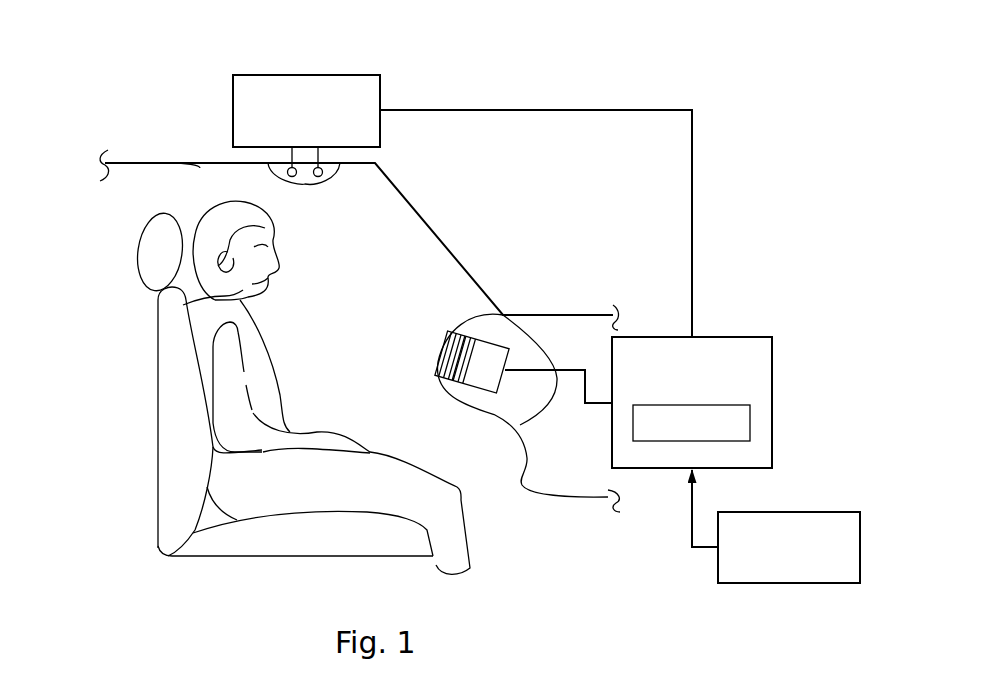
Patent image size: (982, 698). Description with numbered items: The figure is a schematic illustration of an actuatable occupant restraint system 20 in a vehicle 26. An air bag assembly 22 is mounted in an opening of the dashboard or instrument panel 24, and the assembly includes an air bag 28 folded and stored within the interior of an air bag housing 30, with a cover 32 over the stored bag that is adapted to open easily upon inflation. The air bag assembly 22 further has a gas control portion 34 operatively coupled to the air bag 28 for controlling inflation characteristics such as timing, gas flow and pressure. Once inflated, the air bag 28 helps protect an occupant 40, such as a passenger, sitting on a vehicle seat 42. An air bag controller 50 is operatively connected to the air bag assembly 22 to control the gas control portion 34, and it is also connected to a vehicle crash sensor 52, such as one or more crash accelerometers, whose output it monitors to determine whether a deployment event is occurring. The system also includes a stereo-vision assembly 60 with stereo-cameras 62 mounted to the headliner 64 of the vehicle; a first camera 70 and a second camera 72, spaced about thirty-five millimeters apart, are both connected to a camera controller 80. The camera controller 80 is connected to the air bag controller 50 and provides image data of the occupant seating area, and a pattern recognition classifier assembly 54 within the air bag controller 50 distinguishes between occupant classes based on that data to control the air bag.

The actuatable occupant restraint system 20 is at (596, 78).
The air bag assembly 22 is at (491, 330).
The instrument panel 24 is at (476, 313).
The vehicle 26 is at (180, 162).
The air bag 28 is at (445, 378).
The air bag housing 30 is at (478, 392).
The cover 32 is at (440, 345).
The gas control portion 34 is at (497, 380).
The occupant 40 is at (257, 317).
The vehicle seat 42 is at (157, 368).
The air bag controller 50 is at (740, 335).
The vehicle crash sensor 52 is at (793, 510).
The pattern recognition classifier assembly 54 is at (692, 442).
The stereo-vision assembly 60 is at (165, 62).
The stereo-cameras 62 is at (268, 178).
The headliner 64 is at (200, 168).
The first camera 70 is at (292, 180).
The second camera 72 is at (322, 180).
The camera controller 80 is at (362, 75).